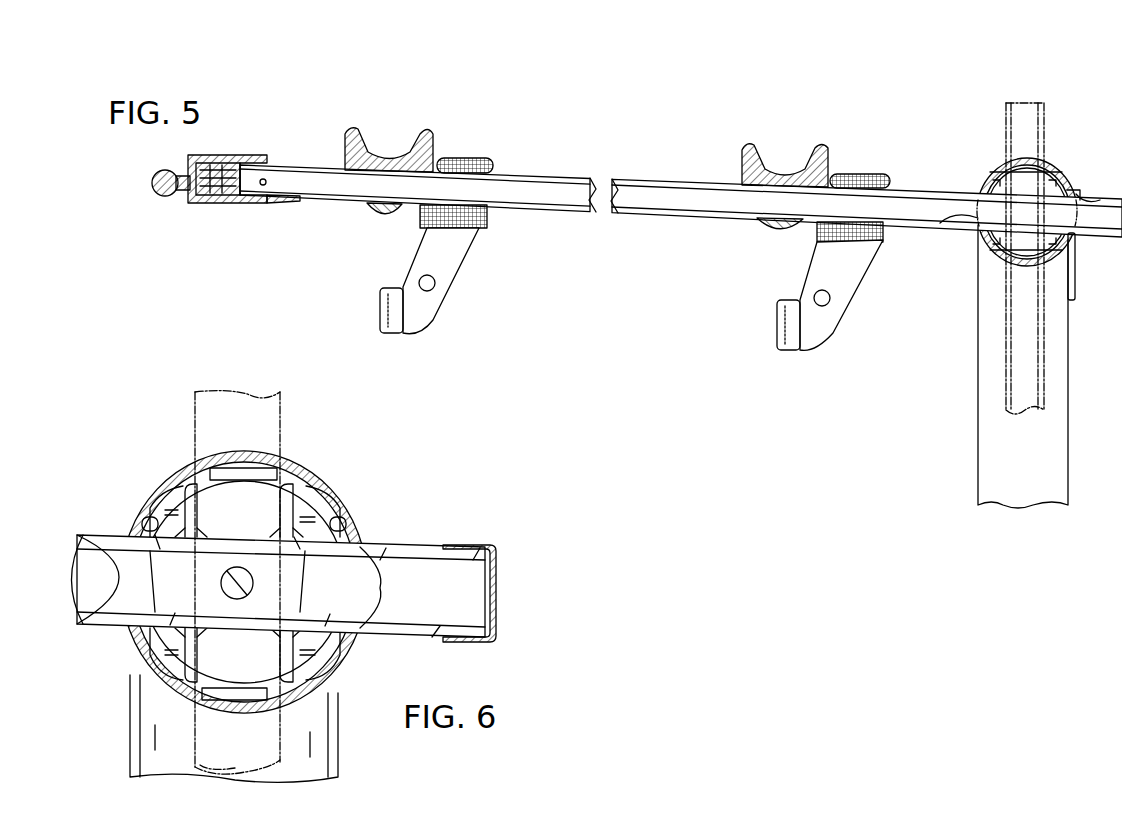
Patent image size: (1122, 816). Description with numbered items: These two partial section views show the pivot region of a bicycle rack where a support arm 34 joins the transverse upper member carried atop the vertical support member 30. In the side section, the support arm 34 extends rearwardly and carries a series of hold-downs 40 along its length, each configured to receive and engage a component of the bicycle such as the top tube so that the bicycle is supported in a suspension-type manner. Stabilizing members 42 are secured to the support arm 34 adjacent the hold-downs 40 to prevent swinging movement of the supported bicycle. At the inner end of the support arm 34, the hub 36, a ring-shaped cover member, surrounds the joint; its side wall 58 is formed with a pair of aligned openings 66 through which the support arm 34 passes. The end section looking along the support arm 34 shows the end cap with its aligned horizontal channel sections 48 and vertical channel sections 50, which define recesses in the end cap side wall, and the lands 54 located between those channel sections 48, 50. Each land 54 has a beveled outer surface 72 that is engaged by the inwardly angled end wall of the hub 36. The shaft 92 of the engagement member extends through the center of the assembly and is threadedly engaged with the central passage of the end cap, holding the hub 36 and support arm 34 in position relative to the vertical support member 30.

In FIG. 5, the vertical support member 30 is at (976, 423).
In FIG. 5, the support arm 34 is at (650, 172).
In FIG. 6, the support arm 34 is at (433, 544).
In FIG. 5, the hub member 36 is at (1066, 165).
In FIG. 6, the hub member 36 is at (314, 470).
In FIG. 5, the hold-down 40 is at (386, 126).
In FIG. 5, the stabilizing member 42 is at (468, 268).
In FIG. 6, the horizontal channel section 48 is at (155, 610).
In FIG. 6, the vertical channel section 50 is at (255, 500).
In FIG. 5, the land 54 is at (1000, 171).
In FIG. 6, the land 54 is at (160, 508).
In FIG. 6, the side wall 58 is at (183, 466).
In FIG. 5, the opening 66 is at (1080, 206).
In FIG. 6, the opening 66 is at (80, 578).
In FIG. 6, the beveled outer surface 72 is at (170, 492).
In FIG. 6, the shaft 92 is at (227, 598).